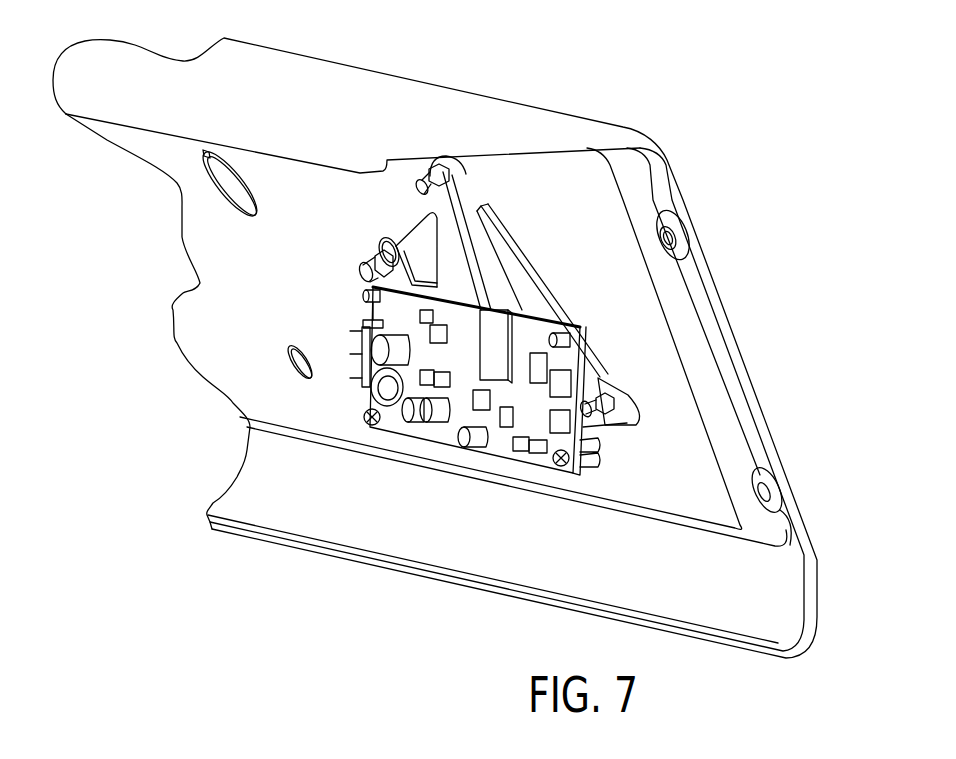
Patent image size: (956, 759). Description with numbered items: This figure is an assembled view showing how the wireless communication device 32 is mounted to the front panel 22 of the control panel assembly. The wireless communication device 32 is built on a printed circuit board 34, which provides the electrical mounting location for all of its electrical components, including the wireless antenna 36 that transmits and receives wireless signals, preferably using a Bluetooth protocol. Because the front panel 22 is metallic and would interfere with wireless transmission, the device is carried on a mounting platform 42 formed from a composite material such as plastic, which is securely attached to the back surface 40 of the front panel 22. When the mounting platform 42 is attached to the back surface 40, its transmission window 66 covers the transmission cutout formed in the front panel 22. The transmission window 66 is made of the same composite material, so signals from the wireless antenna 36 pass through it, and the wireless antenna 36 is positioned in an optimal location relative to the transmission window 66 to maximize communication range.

The front panel 22 is at (733, 323).
The wireless communication device 32 is at (316, 306).
The printed circuit board 34 is at (503, 443).
The wireless antenna 36 is at (497, 333).
The back surface 40 is at (673, 387).
The mounting platform 42 is at (432, 242).
The transmission window 66 is at (533, 283).